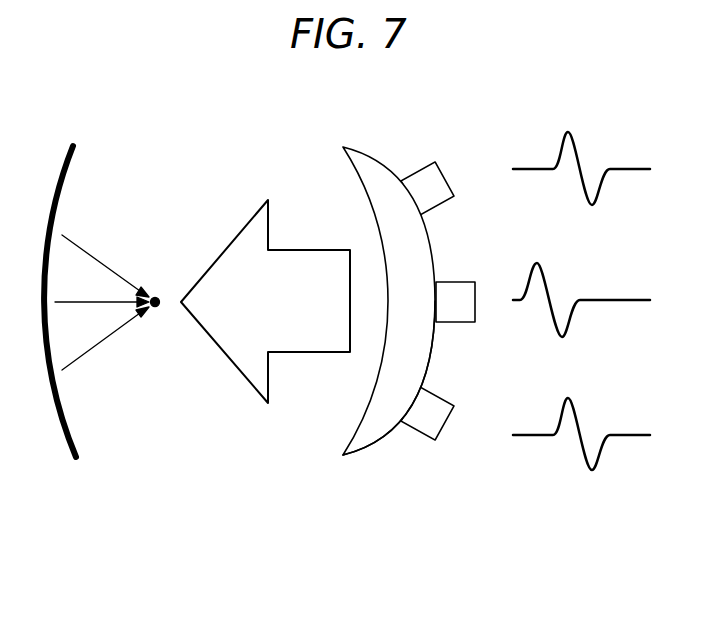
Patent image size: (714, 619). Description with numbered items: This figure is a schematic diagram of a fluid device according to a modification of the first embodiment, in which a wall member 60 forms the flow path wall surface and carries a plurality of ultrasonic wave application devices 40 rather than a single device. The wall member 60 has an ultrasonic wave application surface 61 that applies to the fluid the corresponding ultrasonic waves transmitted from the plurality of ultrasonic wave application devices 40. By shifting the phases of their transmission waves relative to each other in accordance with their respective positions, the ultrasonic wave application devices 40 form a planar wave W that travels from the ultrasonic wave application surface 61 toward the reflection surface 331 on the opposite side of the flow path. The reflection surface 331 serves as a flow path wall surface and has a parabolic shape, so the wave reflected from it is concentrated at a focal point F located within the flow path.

The reflection surface 331 is at (70, 434).
The focal point F is at (157, 294).
The planar wave W is at (238, 373).
The ultrasonic wave application device 40 is at (421, 163).
The wall member 60 is at (370, 152).
The ultrasonic wave application surface 61 is at (364, 424).